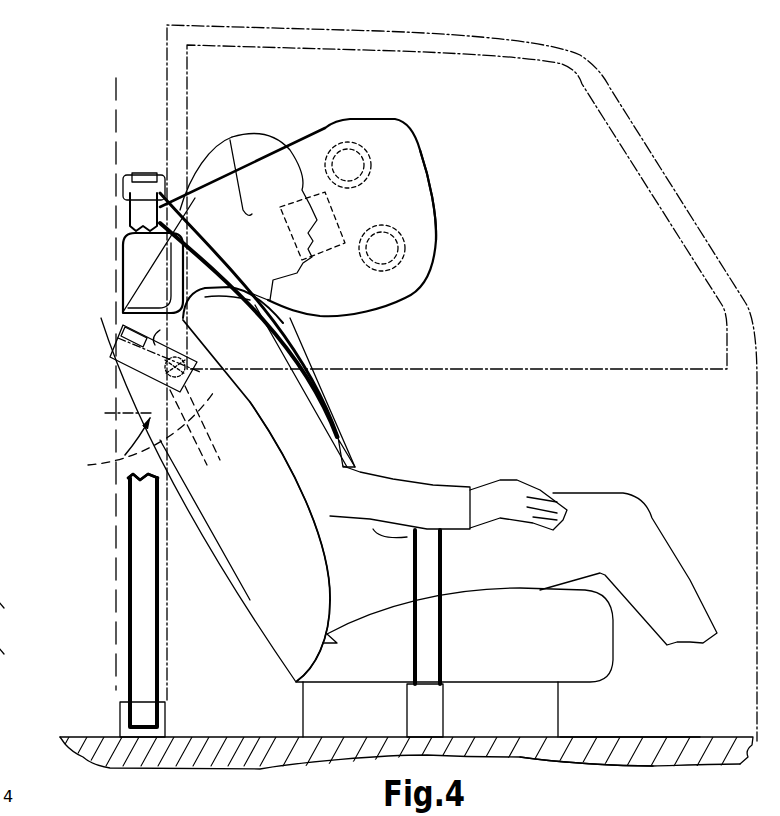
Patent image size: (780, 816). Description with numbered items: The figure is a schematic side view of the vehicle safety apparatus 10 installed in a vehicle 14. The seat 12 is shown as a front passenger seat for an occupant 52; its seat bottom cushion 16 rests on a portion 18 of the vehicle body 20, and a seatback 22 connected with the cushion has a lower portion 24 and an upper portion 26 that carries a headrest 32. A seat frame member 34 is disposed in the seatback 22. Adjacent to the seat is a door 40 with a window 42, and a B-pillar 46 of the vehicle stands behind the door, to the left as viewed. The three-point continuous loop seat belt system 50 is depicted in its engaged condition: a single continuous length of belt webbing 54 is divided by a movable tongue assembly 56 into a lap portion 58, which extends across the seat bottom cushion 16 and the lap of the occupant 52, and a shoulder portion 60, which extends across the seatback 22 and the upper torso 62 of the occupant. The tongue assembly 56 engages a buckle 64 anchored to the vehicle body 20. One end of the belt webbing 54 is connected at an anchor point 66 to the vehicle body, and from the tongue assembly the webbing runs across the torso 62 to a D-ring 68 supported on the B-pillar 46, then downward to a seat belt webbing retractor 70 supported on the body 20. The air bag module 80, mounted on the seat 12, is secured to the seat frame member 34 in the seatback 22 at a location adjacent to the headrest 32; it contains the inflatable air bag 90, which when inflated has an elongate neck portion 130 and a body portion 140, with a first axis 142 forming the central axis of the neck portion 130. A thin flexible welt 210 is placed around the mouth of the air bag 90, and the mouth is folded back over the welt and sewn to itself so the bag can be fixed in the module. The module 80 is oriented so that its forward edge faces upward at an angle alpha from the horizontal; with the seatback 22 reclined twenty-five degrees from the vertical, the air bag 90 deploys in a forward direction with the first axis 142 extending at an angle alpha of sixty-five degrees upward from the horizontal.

The vehicle safety apparatus 10 is at (622, 426).
The seat 12 is at (246, 602).
The vehicle 14 is at (694, 727).
The seat bottom cushion 16 is at (615, 642).
The portion of the vehicle body 18 is at (617, 737).
The vehicle body 20 is at (591, 771).
The seatback 22 is at (222, 557).
The lower portion of the seatback 24 is at (295, 633).
The upper portion of the seatback 26 is at (233, 415).
The headrest 32 is at (124, 232).
The seat frame member 34 is at (95, 465).
The door 40 is at (621, 96).
The window 42 is at (602, 170).
The B-pillar 46 is at (114, 82).
The seat belt system 50 is at (127, 553).
The occupant 52 is at (397, 414).
The belt webbing 54 is at (143, 490).
The tongue assembly 56 is at (0, 605).
The lap portion 58 is at (432, 563).
The shoulder portion 60 is at (290, 340).
The upper torso 62 is at (296, 478).
The buckle 64 is at (0, 646).
The anchor point 66 is at (428, 714).
The D-ring 68 is at (128, 186).
The seat belt webbing retractor 70 is at (123, 719).
The air bag module 80 is at (109, 333).
The air bag 90 is at (427, 171).
The neck portion 130 is at (140, 280).
The body portion 140 is at (318, 147).
The first axis 142 is at (105, 410).
The welt 210 is at (442, 227).
The angle α alpha is at (115, 370).